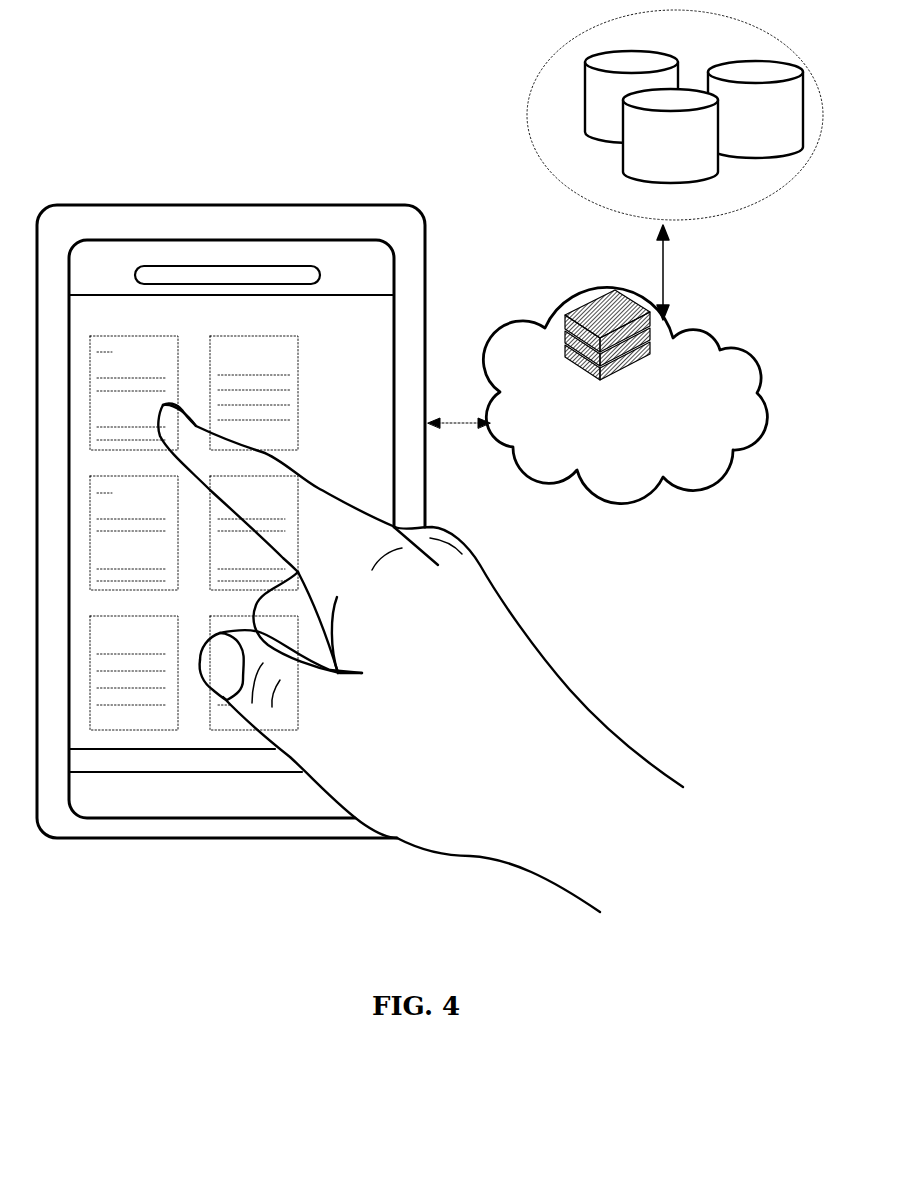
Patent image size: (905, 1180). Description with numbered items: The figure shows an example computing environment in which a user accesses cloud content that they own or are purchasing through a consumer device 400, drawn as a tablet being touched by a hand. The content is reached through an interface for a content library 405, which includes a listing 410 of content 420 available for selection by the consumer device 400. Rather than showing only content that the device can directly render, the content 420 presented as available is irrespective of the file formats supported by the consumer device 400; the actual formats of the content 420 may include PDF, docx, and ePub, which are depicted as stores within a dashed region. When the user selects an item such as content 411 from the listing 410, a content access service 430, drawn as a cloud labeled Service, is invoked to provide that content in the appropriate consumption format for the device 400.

The consumer device 400 is at (97, 205).
The content library 405 is at (590, 300).
The listing 410 is at (310, 350).
The content 411 is at (180, 350).
The content 420 is at (548, 58).
The content access service 430 is at (700, 322).